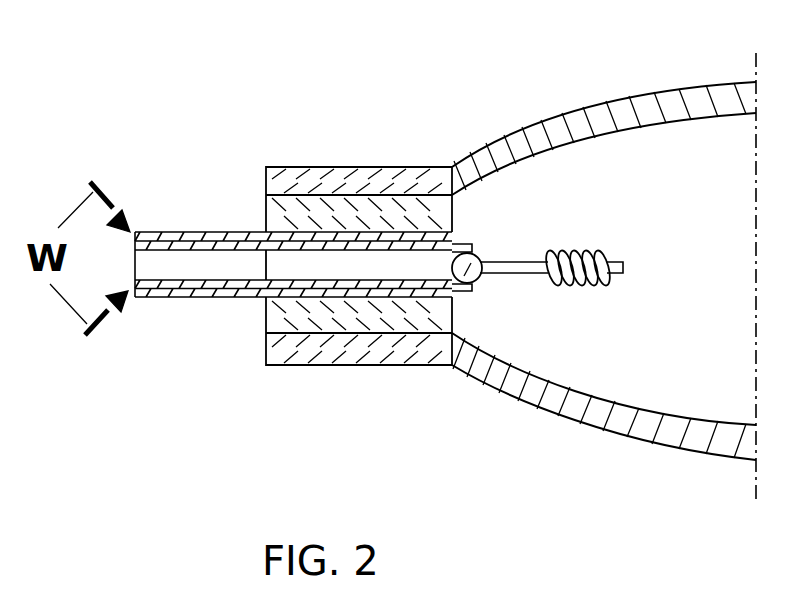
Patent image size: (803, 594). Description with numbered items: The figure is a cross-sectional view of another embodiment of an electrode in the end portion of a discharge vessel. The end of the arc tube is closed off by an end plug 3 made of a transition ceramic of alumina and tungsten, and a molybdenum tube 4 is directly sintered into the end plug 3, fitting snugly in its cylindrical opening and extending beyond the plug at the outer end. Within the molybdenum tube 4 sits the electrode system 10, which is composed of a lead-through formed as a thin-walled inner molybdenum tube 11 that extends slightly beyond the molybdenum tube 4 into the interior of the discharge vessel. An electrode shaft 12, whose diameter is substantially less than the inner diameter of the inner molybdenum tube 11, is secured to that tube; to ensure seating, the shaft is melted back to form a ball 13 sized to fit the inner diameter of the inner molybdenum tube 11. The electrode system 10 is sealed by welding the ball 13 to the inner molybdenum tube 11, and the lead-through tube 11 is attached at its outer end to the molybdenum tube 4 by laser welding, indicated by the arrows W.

The end plug 3 is at (325, 217).
The molybdenum tube 4 is at (193, 297).
The electrode system 10 is at (483, 290).
The inner molybdenum tube 11 is at (465, 244).
The electrode shaft 12 is at (530, 258).
The ball 13 is at (452, 292).